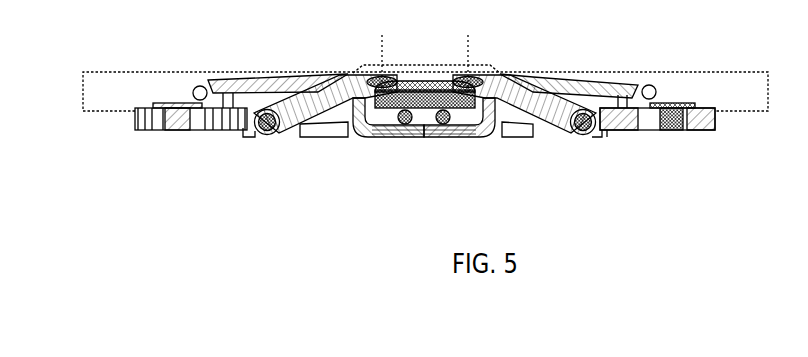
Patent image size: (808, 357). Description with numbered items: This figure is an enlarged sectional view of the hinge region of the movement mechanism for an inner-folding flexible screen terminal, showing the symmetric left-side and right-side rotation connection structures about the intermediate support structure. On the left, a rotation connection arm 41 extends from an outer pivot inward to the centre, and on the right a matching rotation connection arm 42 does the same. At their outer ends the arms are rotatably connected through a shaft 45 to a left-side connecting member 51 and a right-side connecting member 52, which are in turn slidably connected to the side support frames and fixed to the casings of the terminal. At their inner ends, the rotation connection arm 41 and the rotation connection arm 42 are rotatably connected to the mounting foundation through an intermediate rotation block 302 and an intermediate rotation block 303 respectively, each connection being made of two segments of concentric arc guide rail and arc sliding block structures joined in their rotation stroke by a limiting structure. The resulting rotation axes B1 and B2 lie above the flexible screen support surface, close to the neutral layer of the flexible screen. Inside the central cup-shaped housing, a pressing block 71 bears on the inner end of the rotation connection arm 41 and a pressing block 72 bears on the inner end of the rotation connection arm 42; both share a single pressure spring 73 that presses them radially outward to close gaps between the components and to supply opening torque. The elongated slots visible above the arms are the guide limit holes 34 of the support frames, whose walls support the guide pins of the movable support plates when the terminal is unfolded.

The guide limit hole 34 is at (203, 89).
The rotation axis B1 is at (380, 68).
The rotation axis B2 is at (487, 66).
The left-side connecting member 51 is at (143, 130).
The right-side connecting member 52 is at (634, 125).
The shaft 45 is at (265, 133).
The rotation connection arm 41 is at (338, 100).
The rotation connection arm 42 is at (541, 117).
The intermediate rotation block 302 is at (361, 126).
The intermediate rotation block 303 is at (486, 123).
The pressing block 71 is at (400, 123).
The pressing block 72 is at (448, 123).
The pressure spring 73 is at (422, 104).